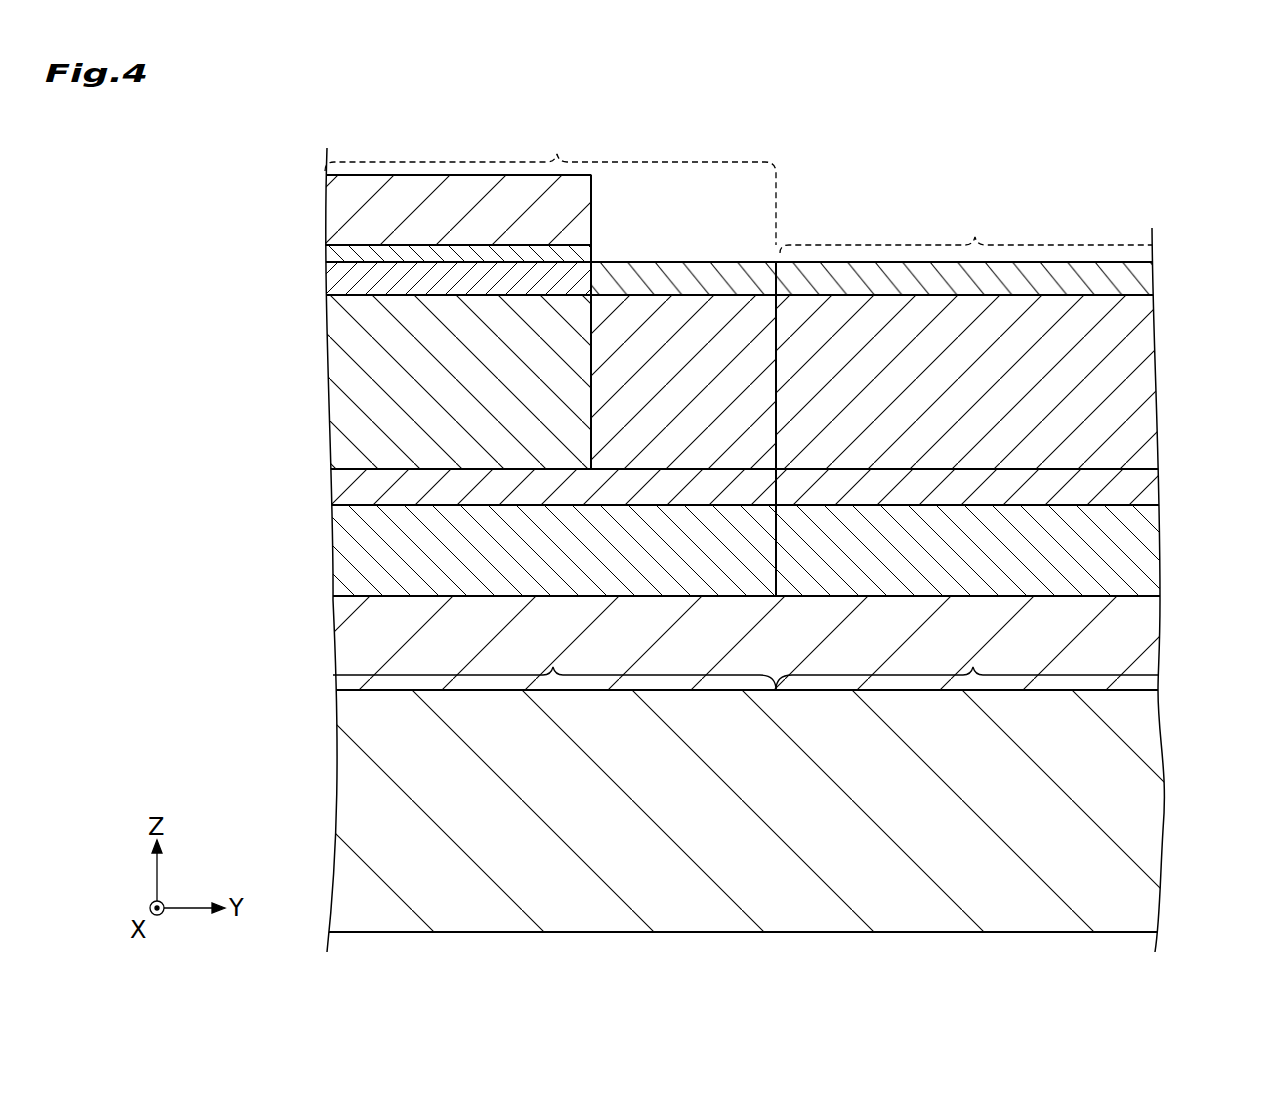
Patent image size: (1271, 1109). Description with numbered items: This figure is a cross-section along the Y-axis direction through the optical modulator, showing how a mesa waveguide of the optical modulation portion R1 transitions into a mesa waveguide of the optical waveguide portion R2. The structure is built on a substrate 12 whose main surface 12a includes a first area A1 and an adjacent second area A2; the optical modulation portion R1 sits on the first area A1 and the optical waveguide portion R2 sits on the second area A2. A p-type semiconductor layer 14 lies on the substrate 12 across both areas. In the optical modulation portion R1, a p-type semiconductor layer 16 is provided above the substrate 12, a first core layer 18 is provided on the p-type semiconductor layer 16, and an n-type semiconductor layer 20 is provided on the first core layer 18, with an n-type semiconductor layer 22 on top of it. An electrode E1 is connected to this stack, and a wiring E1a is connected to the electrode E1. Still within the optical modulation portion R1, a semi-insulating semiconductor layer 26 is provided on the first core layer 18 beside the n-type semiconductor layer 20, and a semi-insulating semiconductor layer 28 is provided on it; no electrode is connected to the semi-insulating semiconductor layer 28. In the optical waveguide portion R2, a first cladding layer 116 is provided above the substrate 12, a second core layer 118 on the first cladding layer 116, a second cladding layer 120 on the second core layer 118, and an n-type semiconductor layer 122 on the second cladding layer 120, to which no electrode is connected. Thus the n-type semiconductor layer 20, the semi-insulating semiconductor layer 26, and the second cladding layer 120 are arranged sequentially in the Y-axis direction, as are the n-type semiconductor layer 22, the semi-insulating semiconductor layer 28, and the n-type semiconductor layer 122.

The wiring E1a is at (362, 199).
The electrode E1 is at (345, 254).
The n-type semiconductor layer 22 is at (355, 276).
The semi-insulating semiconductor layer 28 is at (645, 280).
The semi-insulating semiconductor layer 26 is at (713, 353).
The n-type semiconductor layer 20 is at (362, 385).
The first core layer 18 is at (360, 484).
The p-type semiconductor layer 16 is at (360, 548).
The p-type semiconductor layer 14 is at (1110, 616).
The main surface 12a is at (1093, 688).
The substrate 12 is at (1110, 803).
The n-type semiconductor layer 122 is at (1110, 278).
The second cladding layer 120 is at (1110, 380).
The second core layer 118 is at (1110, 485).
The first cladding layer 116 is at (1110, 546).
The optical modulation portion R1 is at (550, 185).
The optical waveguide portion R2 is at (966, 231).
The first area A1 is at (554, 664).
The second area A2 is at (967, 664).